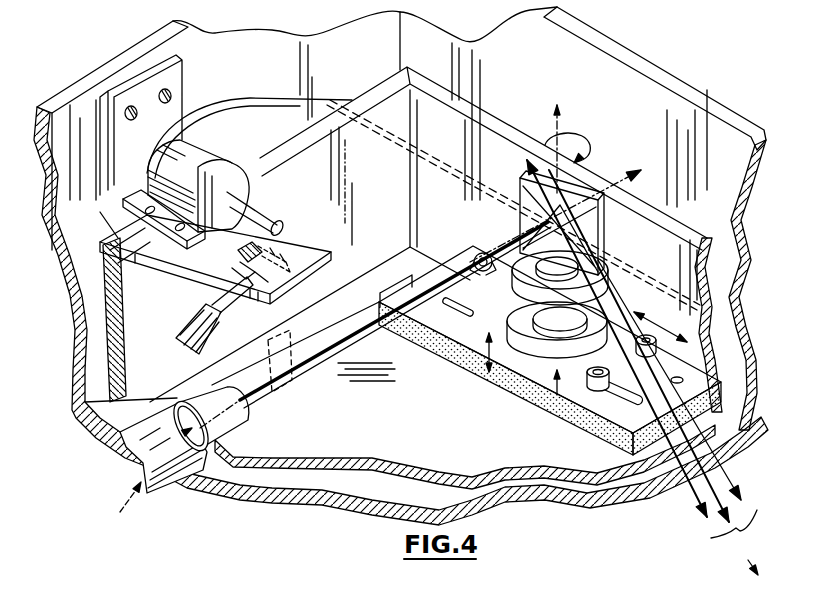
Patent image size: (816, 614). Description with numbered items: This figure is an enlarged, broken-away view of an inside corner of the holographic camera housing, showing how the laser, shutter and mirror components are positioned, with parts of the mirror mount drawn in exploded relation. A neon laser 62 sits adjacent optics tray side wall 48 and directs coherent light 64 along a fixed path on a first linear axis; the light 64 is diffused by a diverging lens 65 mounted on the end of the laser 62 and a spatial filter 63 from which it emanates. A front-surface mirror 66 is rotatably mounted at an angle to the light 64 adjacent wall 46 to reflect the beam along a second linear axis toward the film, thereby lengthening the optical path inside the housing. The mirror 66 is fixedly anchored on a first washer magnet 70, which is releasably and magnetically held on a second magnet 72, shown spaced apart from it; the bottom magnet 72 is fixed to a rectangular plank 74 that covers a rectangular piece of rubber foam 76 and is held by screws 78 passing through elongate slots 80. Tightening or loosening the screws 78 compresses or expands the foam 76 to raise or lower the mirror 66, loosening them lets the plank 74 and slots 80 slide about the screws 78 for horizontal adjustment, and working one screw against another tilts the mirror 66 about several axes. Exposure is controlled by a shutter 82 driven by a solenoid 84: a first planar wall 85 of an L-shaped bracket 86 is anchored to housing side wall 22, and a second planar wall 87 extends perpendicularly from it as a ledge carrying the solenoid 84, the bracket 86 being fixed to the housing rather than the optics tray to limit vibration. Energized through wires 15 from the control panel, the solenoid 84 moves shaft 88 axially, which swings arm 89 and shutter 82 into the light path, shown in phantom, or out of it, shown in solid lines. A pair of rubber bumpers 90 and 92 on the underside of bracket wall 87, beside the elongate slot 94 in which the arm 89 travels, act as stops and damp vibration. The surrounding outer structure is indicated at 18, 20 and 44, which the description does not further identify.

The wires 15 is at (233, 100).
The outer wall 18 is at (586, 487).
The side wall 20 is at (736, 312).
The housing side wall 22 is at (80, 229).
The floor 44 is at (557, 484).
The wall 46 is at (710, 250).
The optics tray side wall 48 is at (132, 332).
The neon laser 62 is at (119, 508).
The spatial filter 63 is at (158, 486).
The coherent light 64 is at (334, 366).
The diverging lens 65 is at (240, 424).
The front-surface mirror 66 is at (530, 213).
The first washer magnet 70 is at (598, 270).
The second magnet 72 is at (528, 362).
The rectangular plank 74 is at (475, 345).
The rubber foam 76 is at (439, 348).
The screws 78 is at (478, 258).
The elongate slots 80 is at (478, 300).
The shutter 82 is at (216, 334).
The solenoid 84 is at (200, 160).
The first planar wall 85 is at (143, 97).
The L-shaped bracket 86 is at (94, 210).
The second planar wall 87 is at (325, 248).
The shaft 88 is at (250, 200).
The arm 89 is at (283, 305).
The rubber bumper 90 is at (228, 277).
The rubber bumper 92 is at (289, 240).
The elongate slot 94 is at (206, 261).